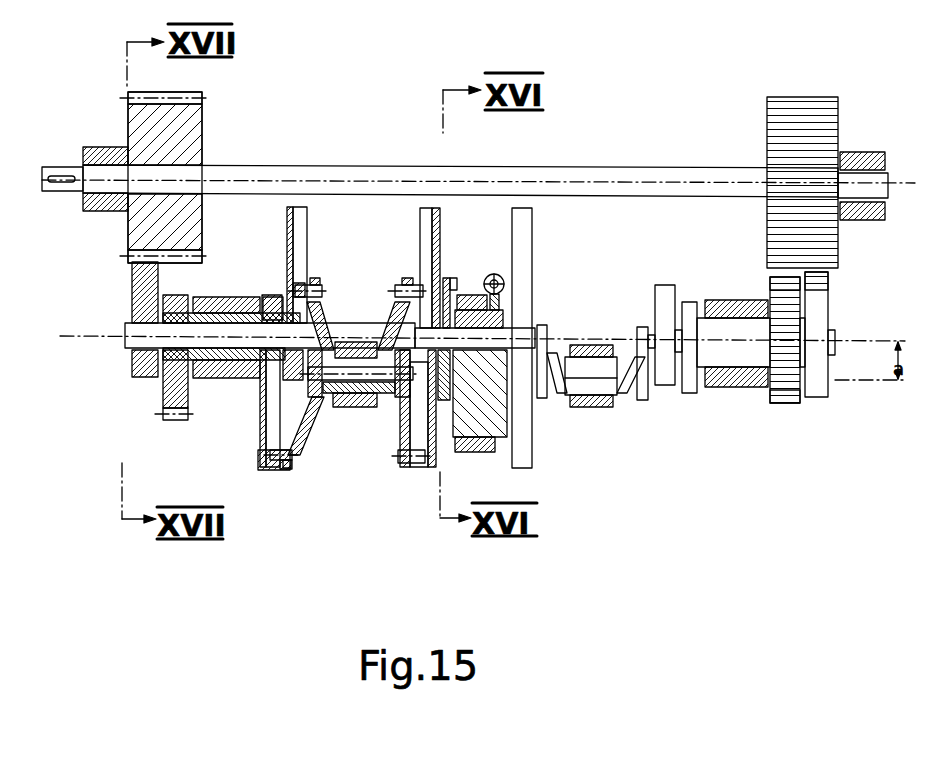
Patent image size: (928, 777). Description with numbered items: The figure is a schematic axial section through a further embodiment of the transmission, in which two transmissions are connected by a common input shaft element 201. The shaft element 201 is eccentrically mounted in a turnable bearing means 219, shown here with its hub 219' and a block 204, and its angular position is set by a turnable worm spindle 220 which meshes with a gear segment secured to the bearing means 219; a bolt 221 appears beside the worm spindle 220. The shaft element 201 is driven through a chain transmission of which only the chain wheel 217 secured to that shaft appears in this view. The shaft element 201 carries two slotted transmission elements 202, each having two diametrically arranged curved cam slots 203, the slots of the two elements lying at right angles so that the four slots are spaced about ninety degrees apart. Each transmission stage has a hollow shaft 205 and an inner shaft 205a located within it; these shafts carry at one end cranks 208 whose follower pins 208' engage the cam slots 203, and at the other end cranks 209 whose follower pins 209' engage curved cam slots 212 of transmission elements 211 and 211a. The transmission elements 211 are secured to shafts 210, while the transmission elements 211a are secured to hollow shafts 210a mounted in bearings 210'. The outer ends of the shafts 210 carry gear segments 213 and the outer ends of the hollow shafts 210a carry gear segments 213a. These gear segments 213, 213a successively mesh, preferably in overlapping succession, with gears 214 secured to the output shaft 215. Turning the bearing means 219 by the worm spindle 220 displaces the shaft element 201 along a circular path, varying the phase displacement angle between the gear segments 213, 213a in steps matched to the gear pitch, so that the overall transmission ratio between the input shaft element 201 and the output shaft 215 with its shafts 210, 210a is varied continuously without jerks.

The common input shaft element 201 is at (507, 320).
The slotted transmission element 202 is at (495, 338).
The curved cam slot 203 is at (400, 354).
The bearing block 204 is at (481, 333).
The hollow shaft 205 is at (477, 397).
The inner shaft 205a is at (362, 407).
The crank 208 is at (432, 400).
The follower pin 208' is at (403, 397).
The crank 209 is at (459, 362).
The follower pin 209' is at (275, 394).
The shaft 210 is at (480, 367).
The bearing 210' is at (480, 336).
The hollow shaft 210a is at (491, 380).
The transmission element 211 is at (477, 337).
The transmission element 211a is at (251, 472).
The curved cam slot 212 is at (283, 337).
The gear segment 213 is at (485, 329).
The gear segment 213a is at (489, 368).
The gear 214 is at (514, 180).
The output shaft 215 is at (465, 164).
The chain wheel 217 is at (469, 291).
The bearing means 219 is at (472, 422).
The hub 219' is at (497, 466).
The worm spindle 220 is at (477, 283).
The bolt 221 is at (538, 287).